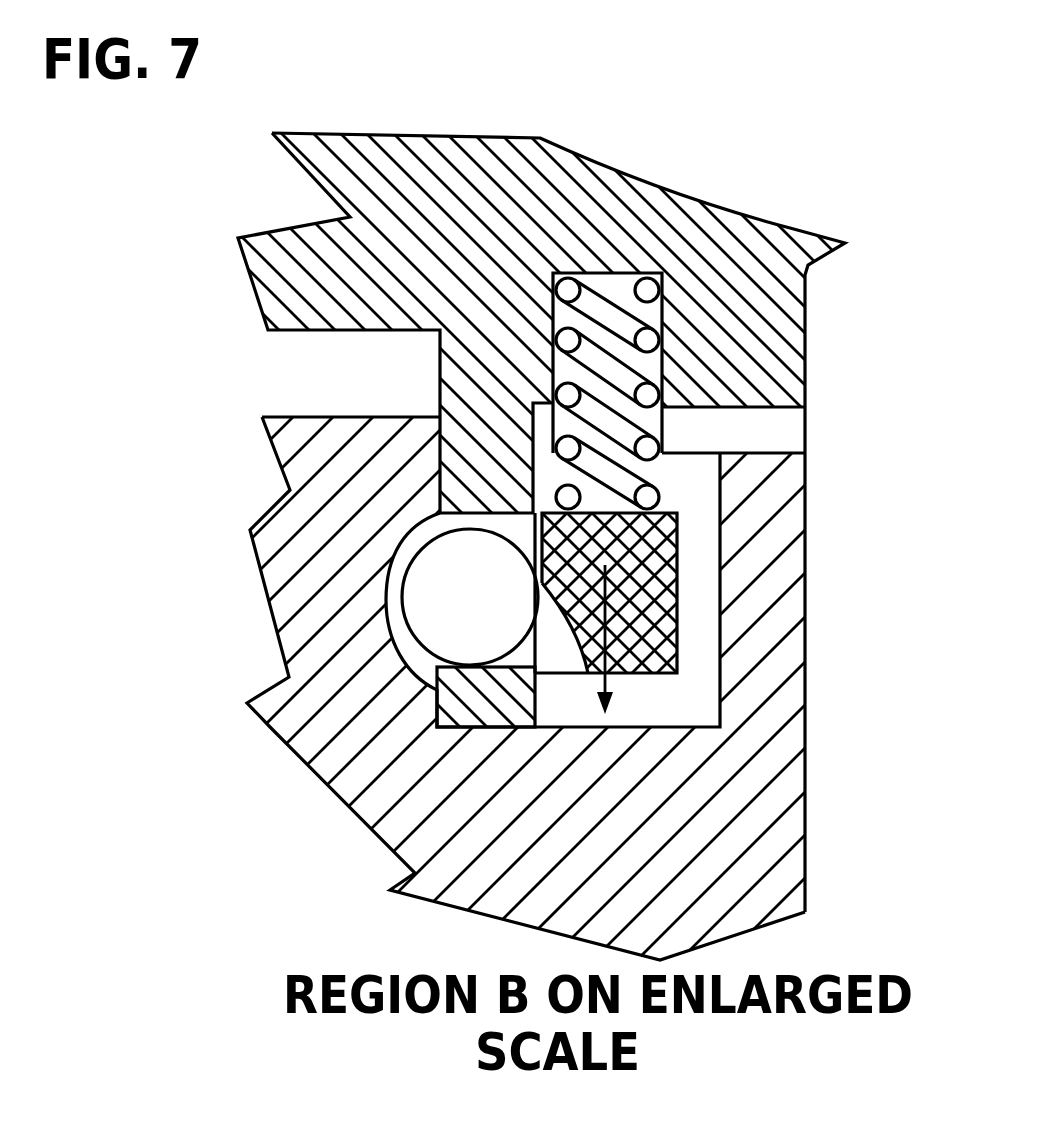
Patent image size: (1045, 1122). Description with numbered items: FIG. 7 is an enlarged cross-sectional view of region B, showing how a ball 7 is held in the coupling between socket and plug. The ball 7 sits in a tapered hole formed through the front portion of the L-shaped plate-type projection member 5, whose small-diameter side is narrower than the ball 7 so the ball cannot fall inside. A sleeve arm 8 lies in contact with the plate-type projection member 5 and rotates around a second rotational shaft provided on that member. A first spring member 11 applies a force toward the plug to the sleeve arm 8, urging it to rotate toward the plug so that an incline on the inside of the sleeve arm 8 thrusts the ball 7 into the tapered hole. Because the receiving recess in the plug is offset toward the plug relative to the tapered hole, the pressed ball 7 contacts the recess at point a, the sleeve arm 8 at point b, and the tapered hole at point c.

The plate-type projection member 5 is at (480, 728).
The ball 7 is at (428, 612).
The sleeve arm 8 is at (660, 606).
The first spring member 11 is at (625, 370).